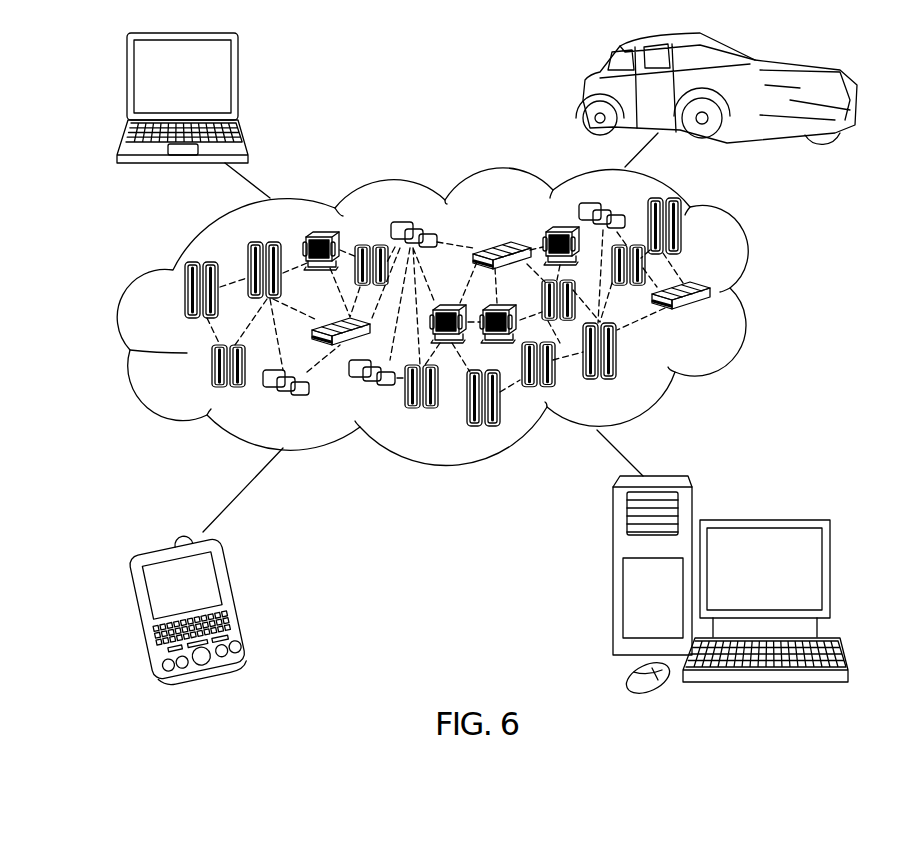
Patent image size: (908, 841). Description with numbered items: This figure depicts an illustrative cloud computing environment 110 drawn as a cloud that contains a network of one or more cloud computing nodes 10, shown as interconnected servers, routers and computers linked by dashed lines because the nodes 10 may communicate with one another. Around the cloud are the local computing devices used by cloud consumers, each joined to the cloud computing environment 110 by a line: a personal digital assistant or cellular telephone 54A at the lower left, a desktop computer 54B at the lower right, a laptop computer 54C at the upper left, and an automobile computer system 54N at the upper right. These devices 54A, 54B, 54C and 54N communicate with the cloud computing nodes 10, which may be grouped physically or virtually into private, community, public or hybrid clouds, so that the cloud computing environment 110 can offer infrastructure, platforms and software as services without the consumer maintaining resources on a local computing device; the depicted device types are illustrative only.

The cloud computing environment 110 is at (762, 292).
The cloud computing node 10 is at (712, 314).
The personal digital assistant or cellular telephone 54A is at (232, 598).
The desktop computer 54B is at (762, 517).
The laptop computer 54C is at (240, 82).
The automobile computer system 54N is at (585, 92).